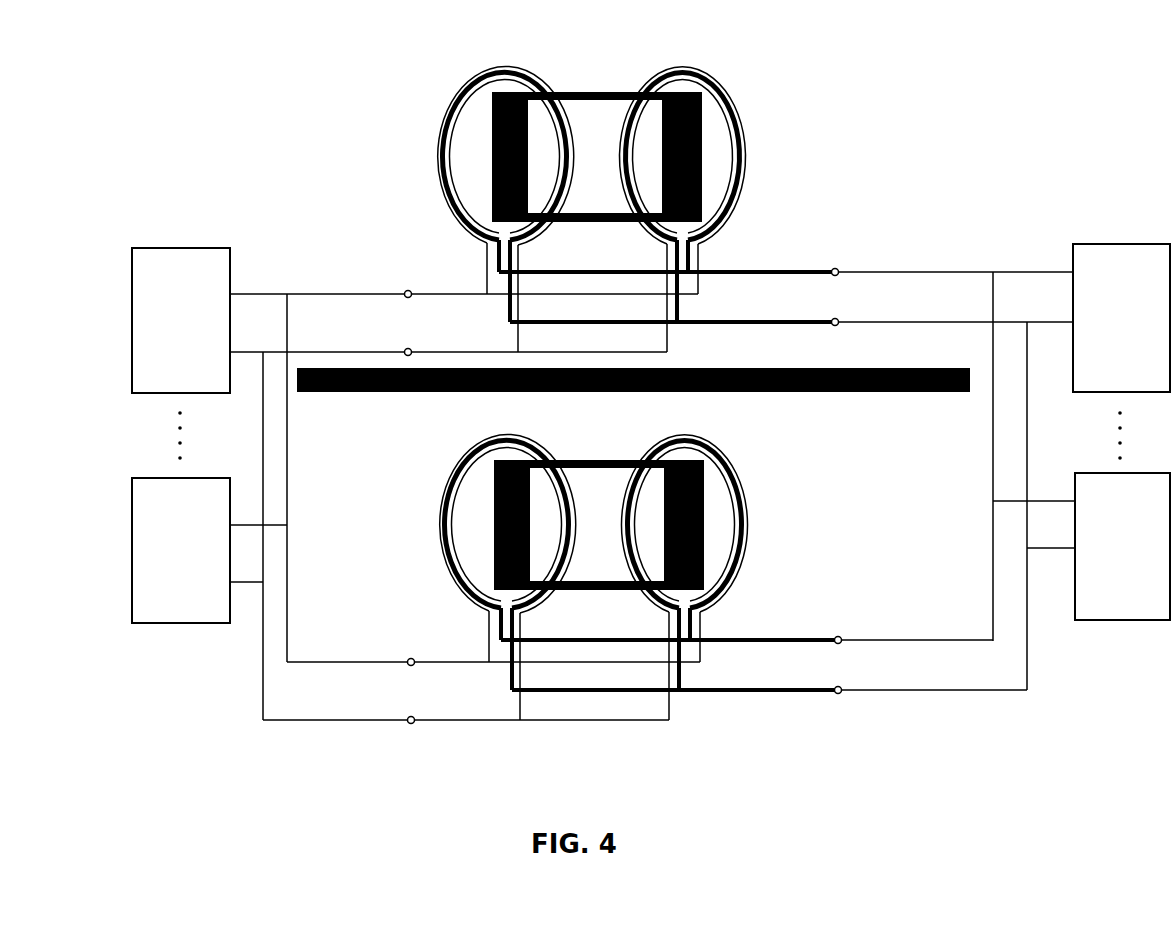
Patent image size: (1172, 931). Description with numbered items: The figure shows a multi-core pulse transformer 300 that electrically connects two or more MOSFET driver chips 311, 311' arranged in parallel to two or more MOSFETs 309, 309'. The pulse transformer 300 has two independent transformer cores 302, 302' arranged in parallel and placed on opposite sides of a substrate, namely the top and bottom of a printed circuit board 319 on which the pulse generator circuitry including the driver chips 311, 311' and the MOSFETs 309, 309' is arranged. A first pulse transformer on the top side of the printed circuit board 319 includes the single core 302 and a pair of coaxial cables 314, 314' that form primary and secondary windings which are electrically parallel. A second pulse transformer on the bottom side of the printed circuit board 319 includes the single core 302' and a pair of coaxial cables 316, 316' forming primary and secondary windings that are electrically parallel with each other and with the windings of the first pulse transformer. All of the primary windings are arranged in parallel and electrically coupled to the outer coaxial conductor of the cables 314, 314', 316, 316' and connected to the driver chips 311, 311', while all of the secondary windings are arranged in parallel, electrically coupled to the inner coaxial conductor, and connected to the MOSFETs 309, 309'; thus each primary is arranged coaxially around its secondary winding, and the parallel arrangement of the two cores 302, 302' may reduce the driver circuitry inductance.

The pulse transformer 300 is at (385, 98).
The transformer core 302 is at (676, 143).
The transformer core 302' is at (678, 512).
The MOSFET 309 is at (1121, 318).
The MOSFET 309' is at (1122, 546).
The MOSFET driver chip 311 is at (181, 320).
The MOSFET driver chip 311' is at (181, 550).
The coaxial cable 314 is at (506, 184).
The coaxial cable 314' is at (683, 184).
The coaxial cable 316 is at (508, 555).
The coaxial cable 316' is at (685, 555).
The printed circuit board 319 is at (910, 368).